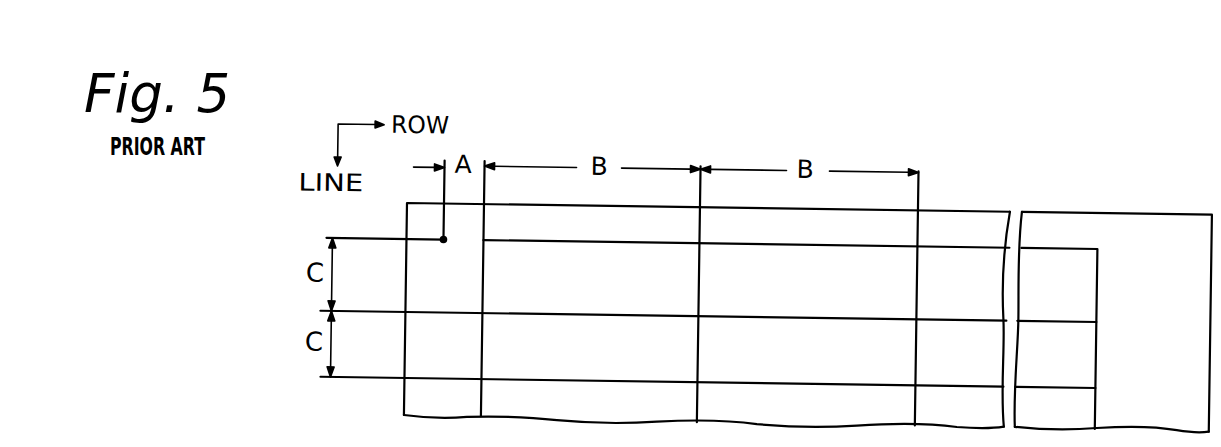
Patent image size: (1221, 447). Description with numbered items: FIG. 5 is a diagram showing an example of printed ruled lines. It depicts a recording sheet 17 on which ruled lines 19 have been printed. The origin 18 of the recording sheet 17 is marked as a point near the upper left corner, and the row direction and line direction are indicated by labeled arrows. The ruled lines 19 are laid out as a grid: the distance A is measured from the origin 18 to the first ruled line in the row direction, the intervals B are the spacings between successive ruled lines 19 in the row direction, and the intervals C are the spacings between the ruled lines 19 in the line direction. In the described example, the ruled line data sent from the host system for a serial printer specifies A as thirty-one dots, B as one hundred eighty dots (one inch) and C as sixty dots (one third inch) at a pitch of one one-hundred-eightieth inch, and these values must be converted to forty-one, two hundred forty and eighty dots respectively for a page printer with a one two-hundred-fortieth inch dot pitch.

The recording sheet 17 is at (1145, 203).
The origin 18 is at (444, 239).
The ruled lines 19 is at (963, 239).